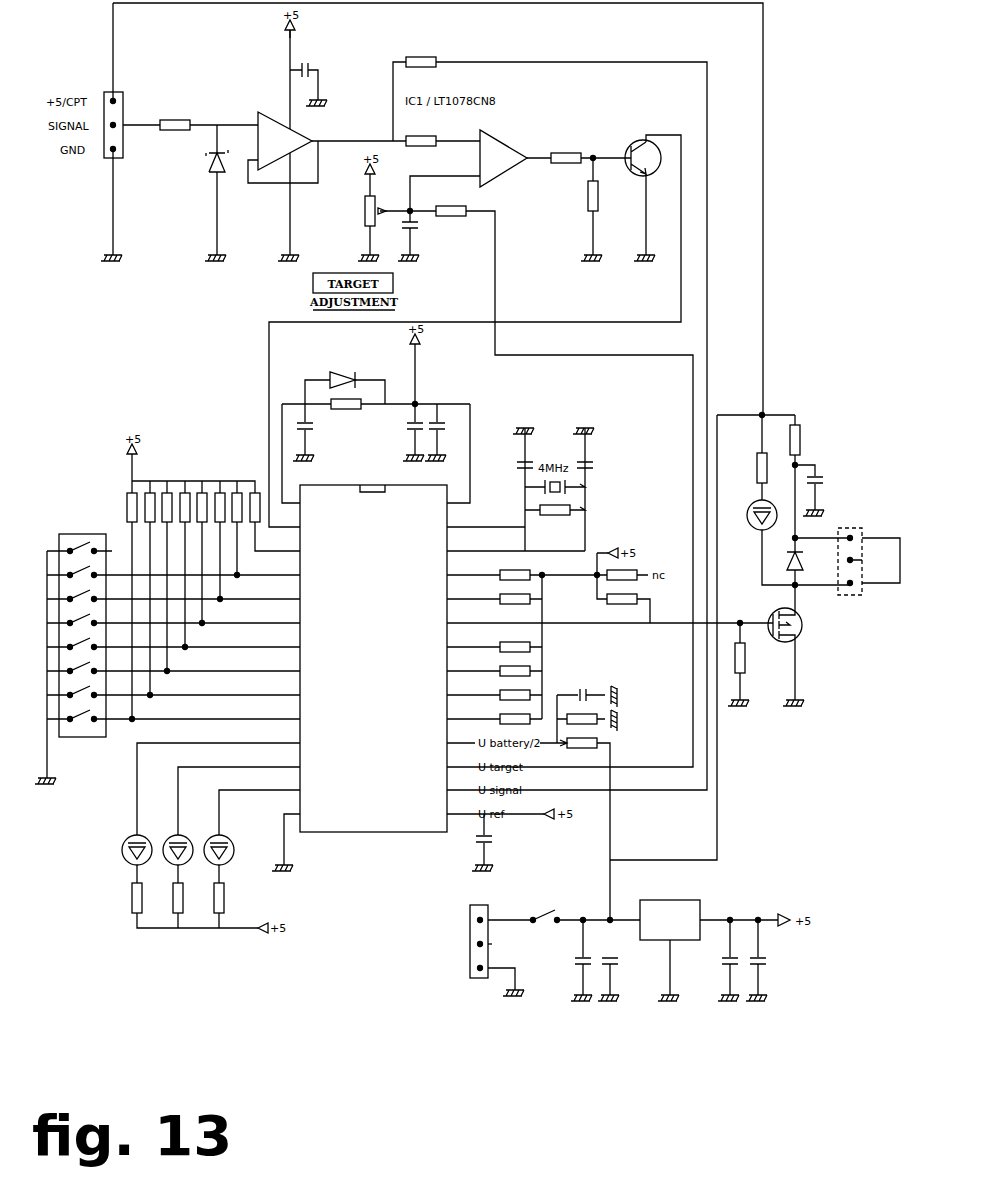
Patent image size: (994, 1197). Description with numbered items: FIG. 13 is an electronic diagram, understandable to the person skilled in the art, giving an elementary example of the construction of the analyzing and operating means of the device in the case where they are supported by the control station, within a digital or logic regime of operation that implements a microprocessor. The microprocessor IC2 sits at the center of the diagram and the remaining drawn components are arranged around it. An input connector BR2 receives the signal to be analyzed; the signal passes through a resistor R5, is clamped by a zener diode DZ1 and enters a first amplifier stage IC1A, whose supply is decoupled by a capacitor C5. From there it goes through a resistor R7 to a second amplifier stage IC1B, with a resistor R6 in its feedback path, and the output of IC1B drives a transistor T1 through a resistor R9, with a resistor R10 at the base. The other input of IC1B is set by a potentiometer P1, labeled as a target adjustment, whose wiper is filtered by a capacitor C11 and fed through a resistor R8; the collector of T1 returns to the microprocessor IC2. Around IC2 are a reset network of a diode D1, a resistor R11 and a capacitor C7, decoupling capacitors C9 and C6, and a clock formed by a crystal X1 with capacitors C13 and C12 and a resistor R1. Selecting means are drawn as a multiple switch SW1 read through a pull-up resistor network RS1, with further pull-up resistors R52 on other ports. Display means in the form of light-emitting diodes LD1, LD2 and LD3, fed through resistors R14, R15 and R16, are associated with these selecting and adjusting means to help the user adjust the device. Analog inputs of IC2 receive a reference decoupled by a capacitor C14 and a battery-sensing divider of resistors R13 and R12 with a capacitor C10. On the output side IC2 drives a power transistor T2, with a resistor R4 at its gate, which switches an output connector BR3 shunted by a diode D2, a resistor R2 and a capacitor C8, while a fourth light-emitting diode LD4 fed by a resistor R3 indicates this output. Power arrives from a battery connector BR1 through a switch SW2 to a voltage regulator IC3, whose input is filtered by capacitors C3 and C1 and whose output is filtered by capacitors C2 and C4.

The sensor input connector BR2 is at (121, 117).
The input series resistor 1K R5 is at (175, 128).
The zener diode BZX55C4V7 DZ1 is at (181, 170).
The op-amp buffer LT1078 IC1A is at (279, 141).
The supply decoupling capacitor 1uF C5 is at (318, 66).
The feedback resistor 1K R6 is at (421, 62).
The input resistor 1K R7 is at (421, 142).
The op-amp comparator LT1078 IC1B is at (503, 157).
The base resistor 33K R9 is at (562, 157).
The pull-down resistor 33K R10 is at (587, 197).
The transistor BC547C T1 is at (648, 140).
The target adjustment potentiometer 100K P1 is at (353, 213).
The filter capacitor 100nF C11 is at (420, 229).
The resistor 1K R8 is at (451, 211).
The diode 1N4148 D1 is at (365, 372).
The reset resistor 10K R11 is at (352, 424).
The reset capacitor 1uF C7 is at (311, 429).
The decoupling capacitor 100nF C9 is at (396, 429).
The decoupling capacitor 2.2uF C6 is at (449, 407).
The microcontroller MC68HC705P9 IC2 is at (373, 664).
The crystal load capacitor 22pF C13 is at (508, 473).
The crystal load capacitor 22pF C12 is at (601, 461).
The 4MHz crystal X1 is at (576, 487).
The oscillator resistor 10M R1 is at (574, 519).
The pull-up resistor network 8x100K R52 is at (568, 647).
The pull-up resistor network 8x100K RS1 is at (193, 490).
The DIP switch SW1 is at (80, 627).
The green LED LD1 is at (115, 848).
The yellow LED LD2 is at (173, 850).
The red LED LD3 is at (231, 841).
The LED resistor 470 R14 is at (132, 924).
The LED resistor 470 R15 is at (173, 924).
The LED resistor 470 R16 is at (214, 924).
The reference capacitor 100nF C14 is at (501, 844).
The filter capacitor 100nF C10 is at (624, 688).
The divider resistor 47K R13 is at (615, 714).
The divider resistor 47K R12 is at (605, 751).
The LED resistor 390 R3 is at (743, 459).
The red LED LD4 is at (751, 520).
The resistor 22 R2 is at (809, 437).
The capacitor 470uF C8 is at (833, 476).
The diode 1N4007 D2 is at (801, 552).
The electrovalve connector BR3 is at (868, 571).
The MOSFET BUZ71 T2 is at (801, 642).
The gate resistor 10K R4 is at (758, 658).
The battery connector BR1 is at (465, 933).
The on/off switch SW2 is at (544, 917).
The voltage regulator LM2936 Z5.0 IC3 is at (663, 905).
The input capacitor 100nF C3 is at (564, 959).
The input capacitor 100uF C1 is at (625, 959).
The output capacitor 100uF C2 is at (718, 959).
The output capacitor 100nF C4 is at (774, 959).